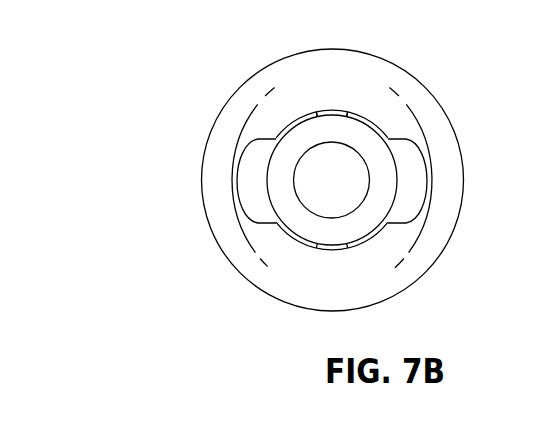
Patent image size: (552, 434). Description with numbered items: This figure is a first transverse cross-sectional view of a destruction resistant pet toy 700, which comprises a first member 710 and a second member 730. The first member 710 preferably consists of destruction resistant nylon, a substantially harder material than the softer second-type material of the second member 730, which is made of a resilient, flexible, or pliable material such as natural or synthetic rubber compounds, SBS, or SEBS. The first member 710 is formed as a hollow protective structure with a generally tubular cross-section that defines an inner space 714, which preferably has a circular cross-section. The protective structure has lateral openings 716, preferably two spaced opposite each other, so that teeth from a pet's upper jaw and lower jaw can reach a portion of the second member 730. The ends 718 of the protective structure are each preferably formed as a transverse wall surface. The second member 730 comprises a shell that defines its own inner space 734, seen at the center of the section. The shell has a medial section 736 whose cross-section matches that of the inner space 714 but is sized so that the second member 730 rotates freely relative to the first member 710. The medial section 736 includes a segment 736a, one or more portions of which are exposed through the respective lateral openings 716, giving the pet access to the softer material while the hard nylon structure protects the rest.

The destruction resistant pet toy 700 is at (202, 65).
The first member 710 is at (412, 173).
The inner space 714 is at (272, 182).
The lateral openings 716 is at (288, 128).
The ends 718 is at (308, 87).
The second member 730 is at (355, 132).
The inner space 734 is at (327, 187).
The medial section 736 is at (415, 179).
The segment 736a is at (328, 128).